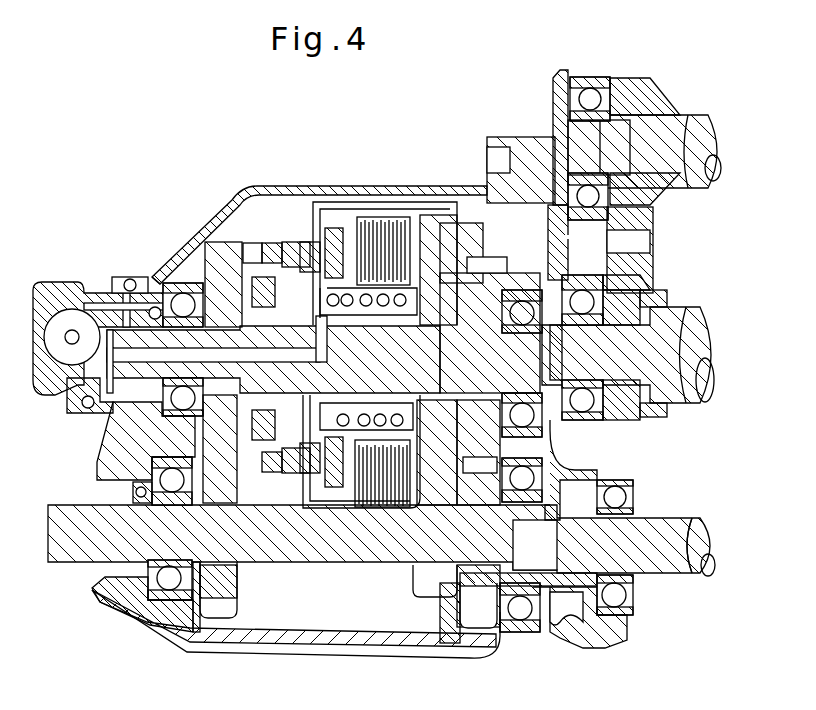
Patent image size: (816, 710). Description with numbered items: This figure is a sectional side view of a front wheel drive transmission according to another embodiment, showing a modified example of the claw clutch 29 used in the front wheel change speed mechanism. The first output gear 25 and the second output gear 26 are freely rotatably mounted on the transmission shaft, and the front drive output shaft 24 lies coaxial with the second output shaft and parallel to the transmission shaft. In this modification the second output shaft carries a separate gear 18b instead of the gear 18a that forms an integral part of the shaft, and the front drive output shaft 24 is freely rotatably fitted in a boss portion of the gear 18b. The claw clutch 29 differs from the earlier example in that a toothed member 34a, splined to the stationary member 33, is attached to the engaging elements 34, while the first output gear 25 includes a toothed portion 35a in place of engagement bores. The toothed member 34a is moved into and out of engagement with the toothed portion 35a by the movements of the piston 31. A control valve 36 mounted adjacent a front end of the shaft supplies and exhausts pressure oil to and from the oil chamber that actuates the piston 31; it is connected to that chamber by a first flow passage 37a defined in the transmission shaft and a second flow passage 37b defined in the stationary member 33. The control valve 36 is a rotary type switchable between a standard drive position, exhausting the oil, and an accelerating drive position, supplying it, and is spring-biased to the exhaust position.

The gear 18a is at (693, 578).
The separate gear 18b is at (562, 582).
The front drive output shaft 24 is at (330, 565).
The first output gear 25 is at (210, 238).
The second output gear 26 is at (395, 211).
The claw clutch 29 is at (268, 290).
The piston 31 is at (328, 226).
The stationary member 33 is at (330, 240).
The engaging elements 34 is at (316, 235).
The toothed member 34a is at (255, 240).
The toothed portion 35a is at (210, 225).
The control valve 36 is at (72, 300).
The first flow passage 37a is at (150, 352).
The second flow passage 37b is at (328, 330).